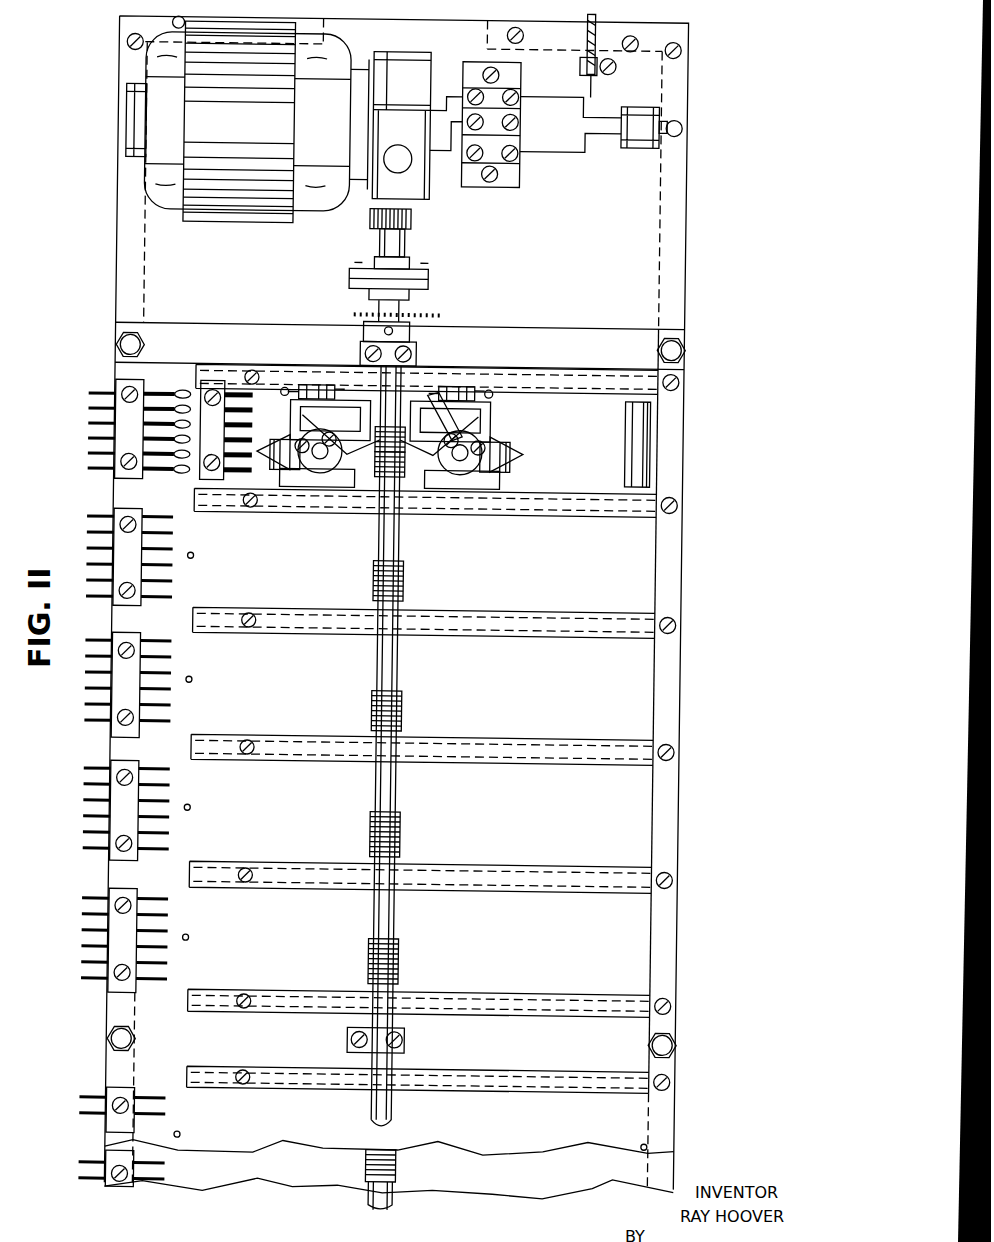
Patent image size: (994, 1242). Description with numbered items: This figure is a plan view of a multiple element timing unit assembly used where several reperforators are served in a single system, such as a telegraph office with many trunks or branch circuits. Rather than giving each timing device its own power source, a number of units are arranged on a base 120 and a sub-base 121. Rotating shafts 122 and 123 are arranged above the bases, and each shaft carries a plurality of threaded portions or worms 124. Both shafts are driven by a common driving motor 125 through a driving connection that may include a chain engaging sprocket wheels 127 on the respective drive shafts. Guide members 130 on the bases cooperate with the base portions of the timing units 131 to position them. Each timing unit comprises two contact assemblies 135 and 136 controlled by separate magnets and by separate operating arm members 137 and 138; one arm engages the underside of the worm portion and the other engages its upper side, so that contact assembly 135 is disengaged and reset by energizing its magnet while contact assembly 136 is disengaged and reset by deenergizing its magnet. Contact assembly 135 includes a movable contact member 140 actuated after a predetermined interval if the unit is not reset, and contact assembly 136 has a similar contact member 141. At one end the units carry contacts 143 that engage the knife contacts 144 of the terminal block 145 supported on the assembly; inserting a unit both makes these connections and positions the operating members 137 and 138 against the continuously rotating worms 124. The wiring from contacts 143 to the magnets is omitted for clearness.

The base 120 is at (627, 196).
The sub-base 121 is at (600, 797).
The rotating shaft 122 is at (394, 1183).
The rotating shaft 123 is at (400, 772).
The threaded portions or worms 124 is at (373, 710).
The driving motor 125 is at (267, 207).
The sprocket wheels 127 is at (350, 313).
The guide members 130 is at (501, 515).
The timing unit 131 is at (608, 421).
The contact assembly 135 is at (297, 431).
The contact assembly 136 is at (493, 430).
The operating arm member 137 is at (378, 478).
The operating arm member 138 is at (399, 478).
The movable contact member 140 is at (304, 386).
The contact member 141 is at (452, 395).
The contacts 143 is at (180, 392).
The knife contacts 144 is at (157, 392).
The terminal block 145 is at (113, 890).